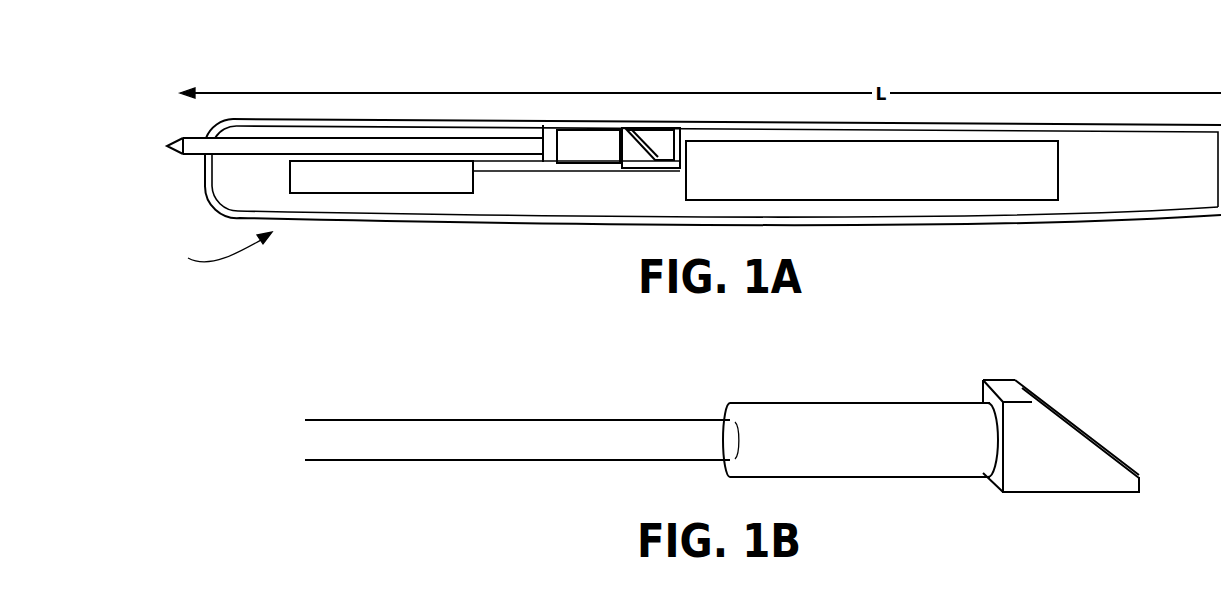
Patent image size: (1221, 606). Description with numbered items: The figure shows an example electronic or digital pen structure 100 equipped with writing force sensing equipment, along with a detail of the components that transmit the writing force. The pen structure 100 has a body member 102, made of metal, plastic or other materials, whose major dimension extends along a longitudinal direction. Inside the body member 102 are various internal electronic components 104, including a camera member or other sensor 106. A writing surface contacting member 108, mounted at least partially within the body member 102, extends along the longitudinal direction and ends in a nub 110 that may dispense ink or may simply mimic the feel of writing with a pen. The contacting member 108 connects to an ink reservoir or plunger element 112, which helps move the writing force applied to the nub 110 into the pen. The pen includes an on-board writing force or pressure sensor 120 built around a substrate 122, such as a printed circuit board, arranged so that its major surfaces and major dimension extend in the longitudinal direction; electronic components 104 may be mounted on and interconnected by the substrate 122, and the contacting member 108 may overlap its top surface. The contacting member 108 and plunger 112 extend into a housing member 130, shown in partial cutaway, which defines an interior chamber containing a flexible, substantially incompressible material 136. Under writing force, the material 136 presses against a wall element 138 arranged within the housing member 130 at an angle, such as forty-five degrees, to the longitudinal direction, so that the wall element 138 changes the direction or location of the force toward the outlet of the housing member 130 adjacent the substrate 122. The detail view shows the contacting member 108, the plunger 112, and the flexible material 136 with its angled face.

In FIG. 1A, the electronic pen structure 100 is at (207, 253).
In FIG. 1A, the body member 102 is at (532, 218).
In FIG. 1A, the internal electronic components 104 is at (970, 177).
In FIG. 1A, the camera member or other sensor 106 is at (373, 185).
In FIG. 1A, the writing surface contacting member 108 is at (448, 147).
In FIG. 1B, the writing surface contacting member 108 is at (465, 442).
In FIG. 1A, the nub 110 is at (170, 153).
In FIG. 1A, the ink reservoir or plunger element 112 is at (577, 147).
In FIG. 1B, the ink reservoir or plunger element 112 is at (800, 440).
In FIG. 1A, the writing force or pressure sensor 120 is at (696, 130).
In FIG. 1A, the substrate 122 is at (605, 168).
In FIG. 1A, the housing member 130 is at (684, 128).
In FIG. 1A, the flexible material 136 is at (635, 157).
In FIG. 1B, the flexible material 136 is at (1065, 457).
In FIG. 1A, the wall element 138 is at (635, 132).